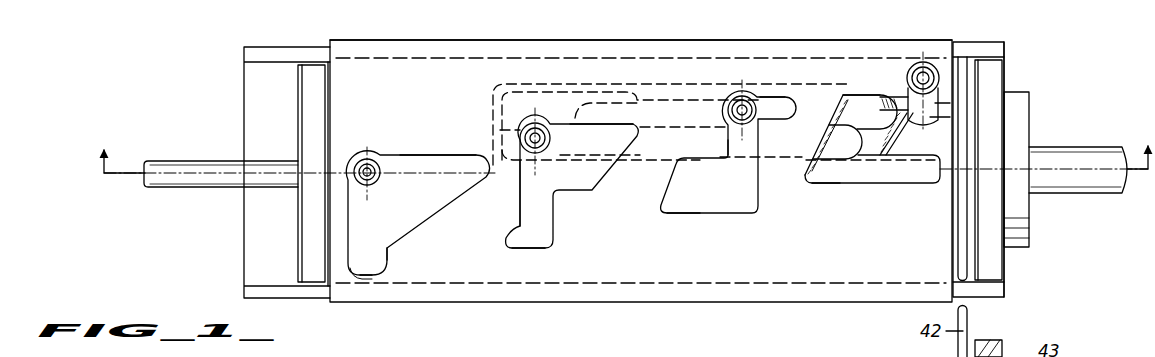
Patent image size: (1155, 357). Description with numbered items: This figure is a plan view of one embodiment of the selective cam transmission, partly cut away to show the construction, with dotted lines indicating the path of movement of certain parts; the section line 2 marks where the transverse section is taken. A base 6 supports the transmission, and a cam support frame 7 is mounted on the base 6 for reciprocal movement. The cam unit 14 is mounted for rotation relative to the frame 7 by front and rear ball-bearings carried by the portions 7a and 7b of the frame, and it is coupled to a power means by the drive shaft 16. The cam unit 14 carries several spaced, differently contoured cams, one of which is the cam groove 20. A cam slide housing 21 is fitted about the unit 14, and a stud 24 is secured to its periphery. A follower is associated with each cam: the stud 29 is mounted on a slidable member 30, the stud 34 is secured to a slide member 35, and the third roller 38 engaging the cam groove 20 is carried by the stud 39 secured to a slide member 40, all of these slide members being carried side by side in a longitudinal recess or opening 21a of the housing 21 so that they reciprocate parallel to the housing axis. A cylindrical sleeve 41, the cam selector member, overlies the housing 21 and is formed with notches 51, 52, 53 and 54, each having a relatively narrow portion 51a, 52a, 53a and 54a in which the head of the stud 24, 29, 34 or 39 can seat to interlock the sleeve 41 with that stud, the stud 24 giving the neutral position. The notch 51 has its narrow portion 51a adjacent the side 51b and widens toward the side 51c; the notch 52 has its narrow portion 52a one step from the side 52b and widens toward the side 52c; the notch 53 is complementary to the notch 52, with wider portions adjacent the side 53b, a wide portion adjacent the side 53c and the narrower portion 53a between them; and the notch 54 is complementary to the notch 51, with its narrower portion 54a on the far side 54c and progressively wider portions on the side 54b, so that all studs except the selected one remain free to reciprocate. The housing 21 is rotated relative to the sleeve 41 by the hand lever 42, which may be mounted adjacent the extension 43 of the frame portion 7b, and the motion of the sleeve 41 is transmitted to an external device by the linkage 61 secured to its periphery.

The section line 2- 2 is at (626, 171).
The base 6 is at (300, 294).
The cam support frame 7 is at (1008, 265).
The front portion of the frame 7a is at (300, 244).
The rear portion of the frame 7b is at (1004, 72).
The cam unit 14 is at (1022, 218).
The drive shaft 16 is at (1081, 153).
The cam groove 20 is at (912, 148).
The cam slide housing 21 is at (888, 185).
The longitudinal recess or opening 21a is at (570, 85).
The stud 24 is at (372, 165).
The stud 29 is at (540, 130).
The slidable member 30 is at (812, 150).
The stud 34 is at (746, 96).
The slide member 35 is at (855, 107).
The third roller 38 is at (930, 117).
The stud 39 is at (928, 70).
The slide member 40 is at (935, 103).
The cylindrical sleeve 41 is at (503, 40).
The hand lever 42 is at (963, 256).
The extension 43 is at (983, 208).
The notch 51 is at (420, 231).
The narrow portion 51a is at (375, 260).
The side of the notch 51b is at (367, 278).
The side of the notch 51c is at (418, 157).
The notch 52 is at (585, 193).
The narrow portion 52a is at (528, 212).
The side of the notch 52b is at (535, 250).
The side of the notch 52c is at (611, 125).
The notch 53 is at (745, 222).
The narrower portion 53a is at (728, 143).
The side of the notch 53b is at (677, 221).
The side of the notch 53c is at (778, 100).
The notch 54 is at (853, 186).
The narrower portion 54a is at (900, 80).
The side of the notch 54b is at (822, 186).
The far side of the notch 54c is at (882, 97).
The linkage 61 is at (204, 164).